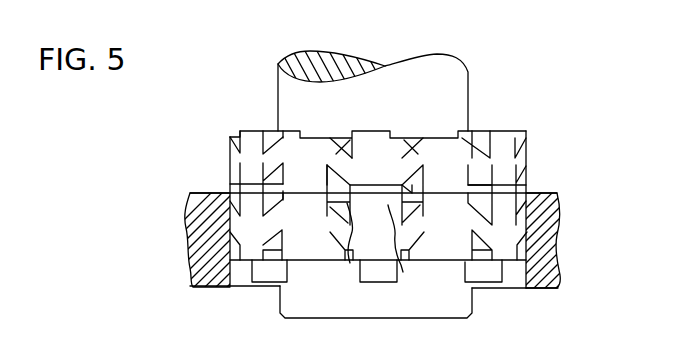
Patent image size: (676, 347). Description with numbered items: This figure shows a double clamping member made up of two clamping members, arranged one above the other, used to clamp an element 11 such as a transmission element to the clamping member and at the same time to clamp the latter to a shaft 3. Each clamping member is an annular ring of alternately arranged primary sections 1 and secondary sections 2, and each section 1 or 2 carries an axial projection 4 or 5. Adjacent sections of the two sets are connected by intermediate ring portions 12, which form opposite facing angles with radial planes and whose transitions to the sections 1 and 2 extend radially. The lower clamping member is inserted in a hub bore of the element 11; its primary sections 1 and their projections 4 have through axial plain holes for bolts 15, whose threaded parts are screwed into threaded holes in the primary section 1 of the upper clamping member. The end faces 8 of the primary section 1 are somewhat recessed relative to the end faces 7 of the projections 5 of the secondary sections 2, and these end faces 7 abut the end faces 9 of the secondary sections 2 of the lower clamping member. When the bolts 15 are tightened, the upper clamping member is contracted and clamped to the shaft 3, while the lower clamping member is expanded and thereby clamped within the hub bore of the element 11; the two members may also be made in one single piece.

The primary section 1 is at (393, 138).
The secondary section 2 is at (312, 142).
The shaft 3 is at (460, 73).
The axial projection of primary section 4 is at (402, 138).
The axial projection of secondary section 5 is at (295, 138).
The end face of projection 7 is at (298, 203).
The end face of primary section 8 is at (413, 190).
The end face of secondary section 9 is at (315, 191).
The transmission member 11 is at (191, 222).
The intermediate ring portion 12 is at (342, 138).
The bolt 15 is at (240, 181).